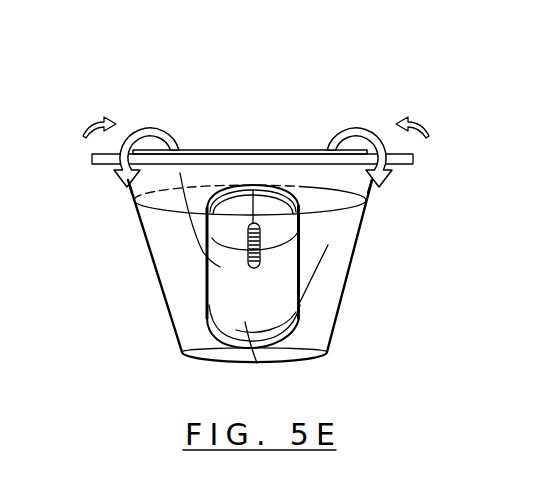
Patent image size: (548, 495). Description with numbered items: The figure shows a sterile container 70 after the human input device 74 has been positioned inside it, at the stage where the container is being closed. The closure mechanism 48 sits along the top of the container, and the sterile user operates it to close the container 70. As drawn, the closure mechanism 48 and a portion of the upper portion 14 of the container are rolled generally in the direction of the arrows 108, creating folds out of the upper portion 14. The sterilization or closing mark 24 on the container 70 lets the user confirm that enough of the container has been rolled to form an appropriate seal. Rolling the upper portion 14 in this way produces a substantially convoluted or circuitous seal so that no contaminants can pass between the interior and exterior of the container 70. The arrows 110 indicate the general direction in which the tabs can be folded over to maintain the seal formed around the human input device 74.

The upper portion 14 is at (205, 149).
The closure mechanism 48 is at (288, 149).
The arrows 110 is at (98, 118).
The arrows 108 is at (118, 181).
The sterilization or closing mark 24 is at (333, 215).
The container 70 is at (166, 330).
The human input device 74 is at (157, 180).